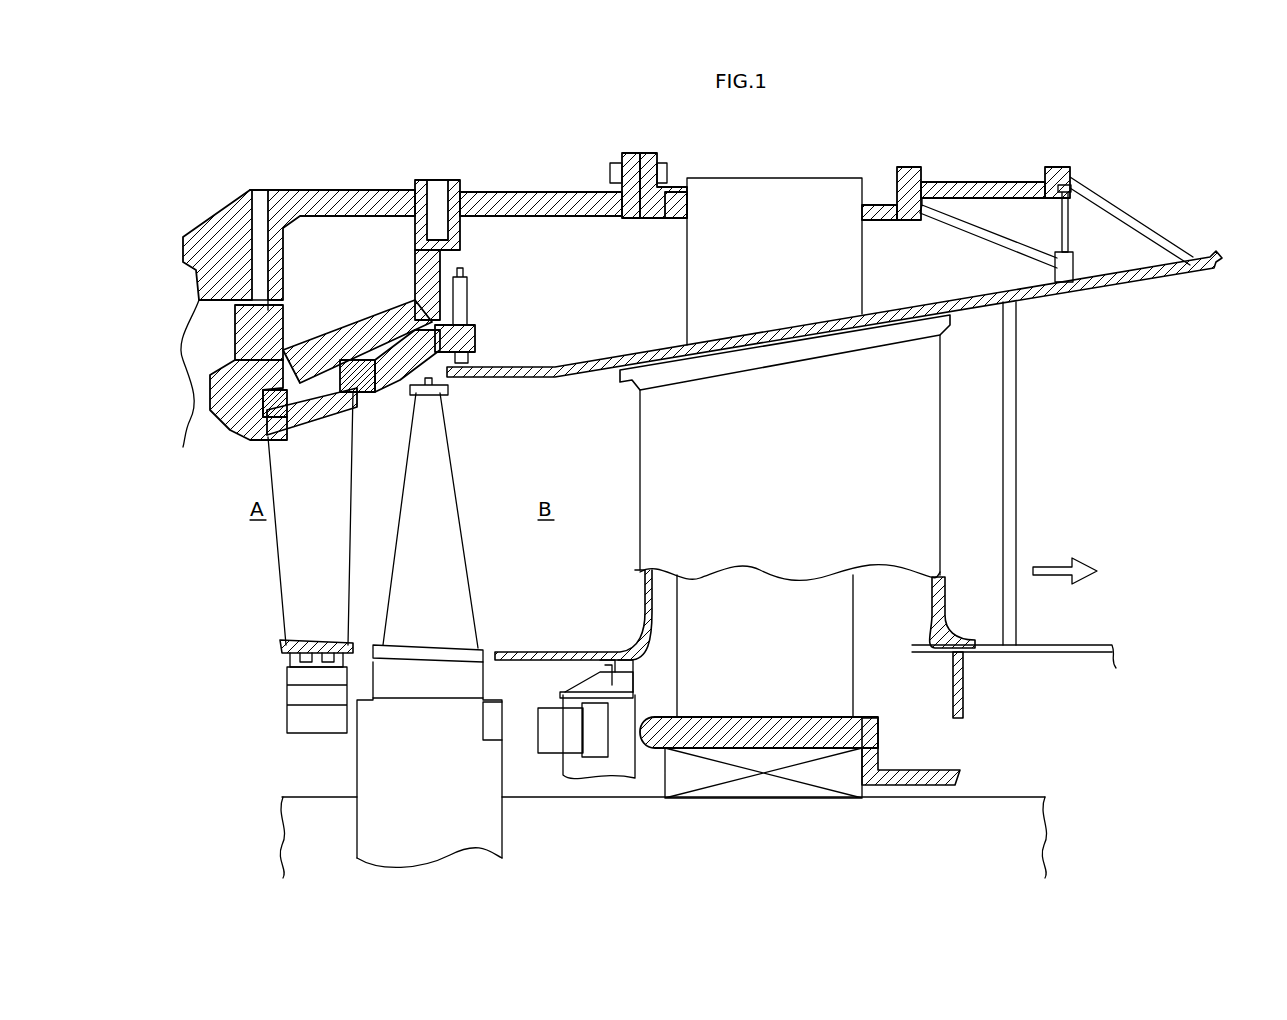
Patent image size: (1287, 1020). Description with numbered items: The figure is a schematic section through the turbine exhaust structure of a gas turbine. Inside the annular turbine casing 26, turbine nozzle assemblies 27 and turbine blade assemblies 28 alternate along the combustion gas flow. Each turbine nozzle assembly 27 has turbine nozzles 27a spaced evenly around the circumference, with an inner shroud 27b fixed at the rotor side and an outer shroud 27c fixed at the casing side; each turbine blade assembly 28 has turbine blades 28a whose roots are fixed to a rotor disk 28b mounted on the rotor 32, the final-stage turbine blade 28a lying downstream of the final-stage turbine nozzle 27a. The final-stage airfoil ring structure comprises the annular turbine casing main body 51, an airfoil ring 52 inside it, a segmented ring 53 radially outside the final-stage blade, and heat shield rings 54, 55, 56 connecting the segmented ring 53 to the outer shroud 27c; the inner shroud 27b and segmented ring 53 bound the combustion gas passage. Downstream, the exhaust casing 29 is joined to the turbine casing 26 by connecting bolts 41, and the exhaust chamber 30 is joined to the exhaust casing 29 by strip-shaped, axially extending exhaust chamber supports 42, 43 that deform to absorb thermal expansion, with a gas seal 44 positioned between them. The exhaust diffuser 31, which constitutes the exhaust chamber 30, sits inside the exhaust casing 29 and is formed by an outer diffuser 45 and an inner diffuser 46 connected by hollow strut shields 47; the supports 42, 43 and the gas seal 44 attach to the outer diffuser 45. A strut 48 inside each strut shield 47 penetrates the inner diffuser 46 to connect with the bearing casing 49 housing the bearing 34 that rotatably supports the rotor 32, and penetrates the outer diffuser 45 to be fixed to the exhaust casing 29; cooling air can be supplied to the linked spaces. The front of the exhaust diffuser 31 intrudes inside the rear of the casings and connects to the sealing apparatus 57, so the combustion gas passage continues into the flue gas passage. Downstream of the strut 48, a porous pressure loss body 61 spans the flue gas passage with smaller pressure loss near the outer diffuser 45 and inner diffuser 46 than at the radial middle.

The turbine casing 26 is at (296, 190).
The turbine nozzle assembly 27 is at (284, 580).
The turbine nozzle 27a is at (297, 473).
The inner shroud 27b is at (283, 648).
The outer shroud 27c is at (264, 408).
The turbine blade assembly 28 is at (385, 603).
The turbine blade 28a is at (430, 527).
The rotor disk 28b is at (480, 828).
The exhaust casing 29 is at (938, 180).
The exhaust chamber 30 is at (1212, 250).
The exhaust diffuser 31 is at (1095, 385).
The rotor 32 is at (1033, 820).
The bearing 34 is at (770, 790).
The connecting bolt 41 is at (610, 172).
The exhaust chamber support 42 is at (984, 226).
The exhaust chamber support 43 is at (1128, 217).
The gas seal 44 is at (1067, 220).
The outer diffuser 45 is at (1040, 296).
The inner diffuser 46 is at (1062, 640).
The strut shield 47 is at (920, 460).
The strut 48 is at (760, 192).
The bearing casing 49 is at (830, 727).
The turbine casing main body 51 is at (216, 222).
The airfoil ring 52 is at (238, 336).
The segmented ring 53 is at (412, 340).
The heat shield ring 54 is at (440, 308).
The heat shield ring 55 is at (356, 358).
The heat shield ring 56 is at (262, 386).
The sealing apparatus 57 is at (463, 290).
The pressure loss body 61 is at (1024, 632).